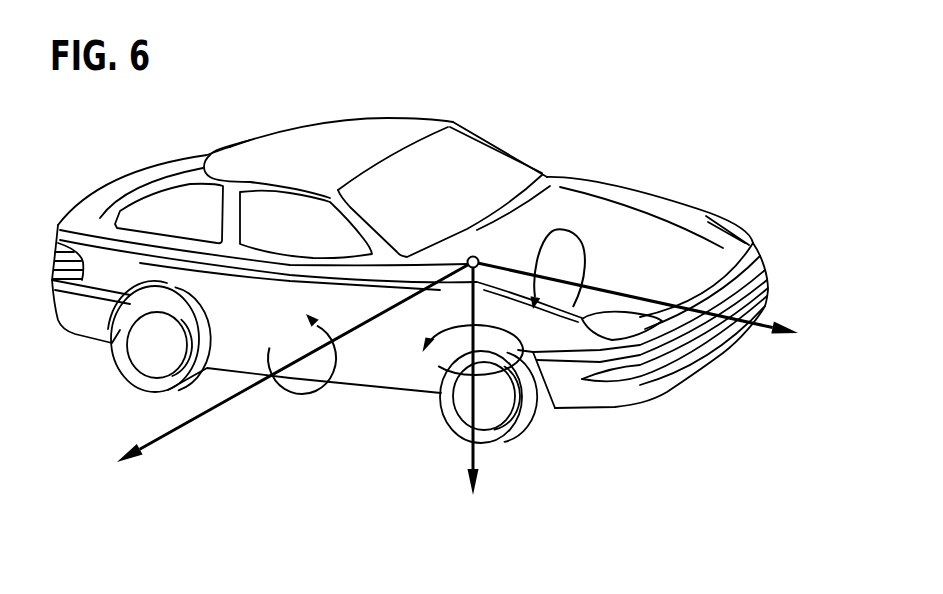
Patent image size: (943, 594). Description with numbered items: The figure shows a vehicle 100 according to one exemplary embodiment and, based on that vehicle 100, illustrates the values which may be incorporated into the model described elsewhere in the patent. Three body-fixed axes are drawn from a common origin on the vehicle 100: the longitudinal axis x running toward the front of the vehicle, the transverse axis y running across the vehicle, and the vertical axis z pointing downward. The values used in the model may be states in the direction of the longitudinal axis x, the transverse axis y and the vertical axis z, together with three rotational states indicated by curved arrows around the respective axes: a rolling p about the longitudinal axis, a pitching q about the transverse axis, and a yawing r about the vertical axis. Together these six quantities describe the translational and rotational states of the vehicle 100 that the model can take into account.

The vehicle 100 is at (410, 119).
The longitudinal axis x is at (647, 305).
The transverse axis y is at (285, 369).
The vertical axis z is at (474, 392).
The rolling p is at (558, 269).
The pitching q is at (302, 354).
The yawing r is at (473, 335).